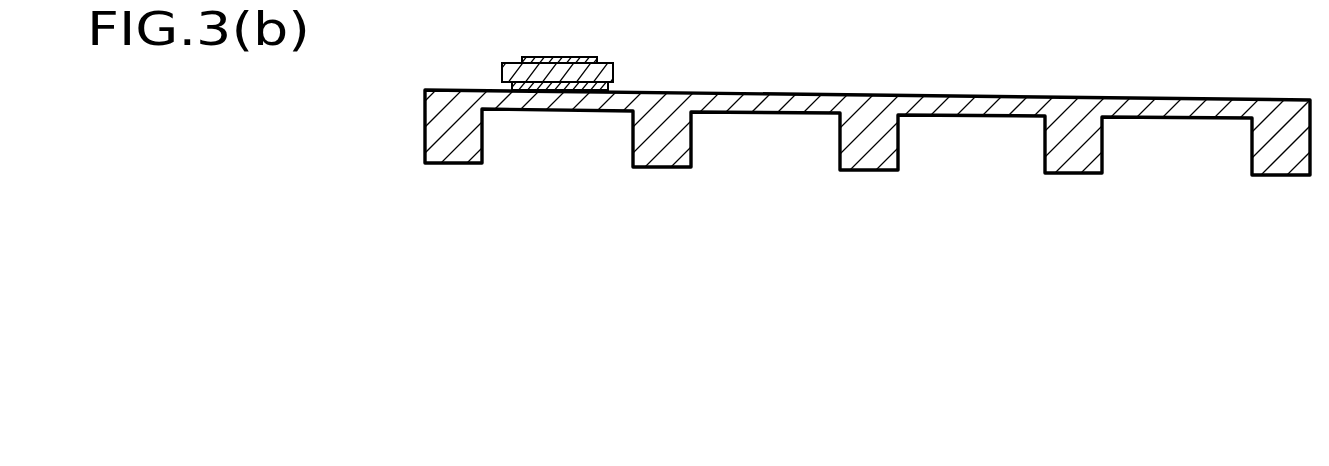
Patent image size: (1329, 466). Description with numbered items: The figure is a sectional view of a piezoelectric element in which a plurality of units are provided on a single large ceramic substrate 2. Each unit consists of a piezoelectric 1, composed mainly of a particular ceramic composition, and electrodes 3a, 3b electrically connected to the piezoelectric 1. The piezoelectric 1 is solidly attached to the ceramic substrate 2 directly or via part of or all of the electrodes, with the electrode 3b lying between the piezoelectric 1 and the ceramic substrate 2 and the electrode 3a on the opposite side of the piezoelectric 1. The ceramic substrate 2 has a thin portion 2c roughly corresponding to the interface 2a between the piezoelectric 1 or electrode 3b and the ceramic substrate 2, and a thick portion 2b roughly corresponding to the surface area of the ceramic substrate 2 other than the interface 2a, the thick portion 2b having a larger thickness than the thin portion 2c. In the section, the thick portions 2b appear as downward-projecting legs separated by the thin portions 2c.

The piezoelectric 1 is at (605, 73).
The ceramic substrate 2 is at (405, 85).
The interface 2a is at (562, 92).
The thick portion 2b is at (457, 153).
The thin portion 2c is at (510, 110).
The electrode 3a is at (546, 57).
The electrode 3b is at (512, 88).